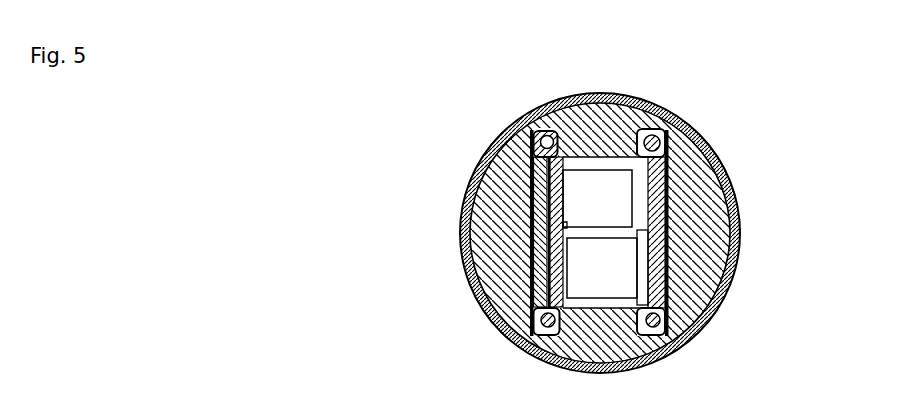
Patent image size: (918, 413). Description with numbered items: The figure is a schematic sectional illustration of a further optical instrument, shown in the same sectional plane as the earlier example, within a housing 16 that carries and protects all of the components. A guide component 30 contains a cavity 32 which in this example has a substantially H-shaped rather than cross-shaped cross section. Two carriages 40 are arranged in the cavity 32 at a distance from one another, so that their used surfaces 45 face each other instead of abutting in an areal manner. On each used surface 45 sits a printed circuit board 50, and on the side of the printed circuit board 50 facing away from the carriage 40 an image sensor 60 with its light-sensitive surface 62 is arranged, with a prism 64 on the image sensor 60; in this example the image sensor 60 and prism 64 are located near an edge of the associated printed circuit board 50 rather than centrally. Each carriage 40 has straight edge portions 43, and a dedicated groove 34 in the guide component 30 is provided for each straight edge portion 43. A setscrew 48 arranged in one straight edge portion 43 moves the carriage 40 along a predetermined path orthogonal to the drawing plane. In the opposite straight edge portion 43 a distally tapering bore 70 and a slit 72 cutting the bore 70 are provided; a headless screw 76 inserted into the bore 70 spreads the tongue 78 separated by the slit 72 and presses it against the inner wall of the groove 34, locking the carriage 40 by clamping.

The housing 16 is at (732, 288).
The guide component 30 is at (732, 210).
The cavity 32 is at (643, 205).
The groove 34 is at (662, 132).
The carriage 40 is at (663, 240).
The straight edge portion 43 is at (662, 150).
The used surface 45 is at (637, 157).
The setscrew 48 is at (541, 319).
The printed circuit board 50 is at (553, 203).
The image sensor 60 is at (566, 225).
The light-sensitive surface 62 is at (566, 218).
The prism 64 is at (583, 175).
The bore 70 is at (536, 163).
The slit 72 is at (541, 143).
The headless screw 76 is at (660, 331).
The tongue 78 is at (538, 135).